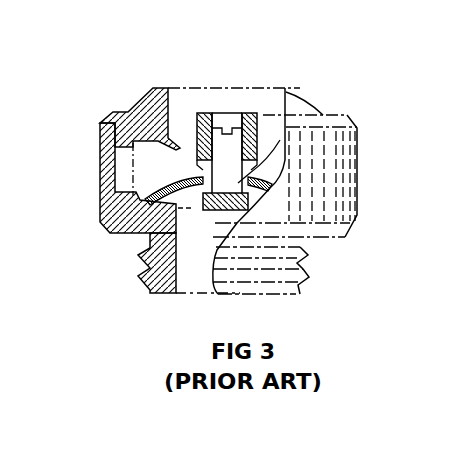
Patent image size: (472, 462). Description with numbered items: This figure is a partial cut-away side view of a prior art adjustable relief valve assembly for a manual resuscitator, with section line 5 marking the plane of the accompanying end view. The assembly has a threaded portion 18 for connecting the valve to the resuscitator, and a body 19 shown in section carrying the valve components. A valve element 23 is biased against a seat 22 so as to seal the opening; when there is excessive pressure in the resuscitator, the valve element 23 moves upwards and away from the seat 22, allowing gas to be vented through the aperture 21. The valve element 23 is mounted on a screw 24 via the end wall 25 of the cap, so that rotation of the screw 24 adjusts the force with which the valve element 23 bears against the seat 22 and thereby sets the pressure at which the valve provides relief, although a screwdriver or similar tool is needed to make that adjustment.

The section line 5- 5 is at (182, 68).
The threaded portion 18 is at (331, 265).
The insert body 19 is at (100, 231).
The aperture 21 is at (175, 126).
The seat 22 is at (147, 239).
The valve element 23 is at (167, 186).
The screw 24 is at (238, 114).
The end wall of the cap 25 is at (206, 122).